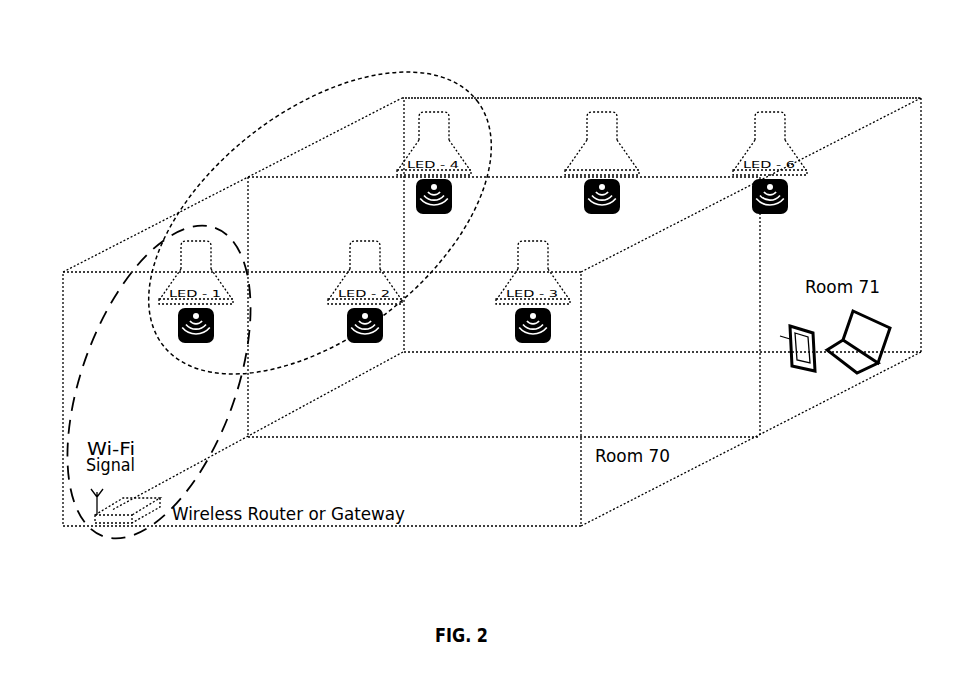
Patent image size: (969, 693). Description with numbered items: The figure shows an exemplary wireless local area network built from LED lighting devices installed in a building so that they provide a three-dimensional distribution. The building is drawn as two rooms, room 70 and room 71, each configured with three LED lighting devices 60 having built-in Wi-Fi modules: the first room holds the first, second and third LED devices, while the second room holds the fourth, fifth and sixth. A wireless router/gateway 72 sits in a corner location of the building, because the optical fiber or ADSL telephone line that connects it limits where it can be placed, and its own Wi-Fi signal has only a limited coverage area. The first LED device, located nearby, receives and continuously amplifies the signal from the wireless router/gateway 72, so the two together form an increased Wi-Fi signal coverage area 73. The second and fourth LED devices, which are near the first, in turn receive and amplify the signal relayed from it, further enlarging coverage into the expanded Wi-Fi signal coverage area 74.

The LED lighting device 60 is at (603, 113).
The room 70 is at (175, 215).
The room 71 is at (335, 132).
The wireless router/gateway 72 is at (93, 520).
The Wi-Fi signal coverage area 73 is at (83, 358).
The expanded Wi-Fi signal coverage area 74 is at (444, 74).